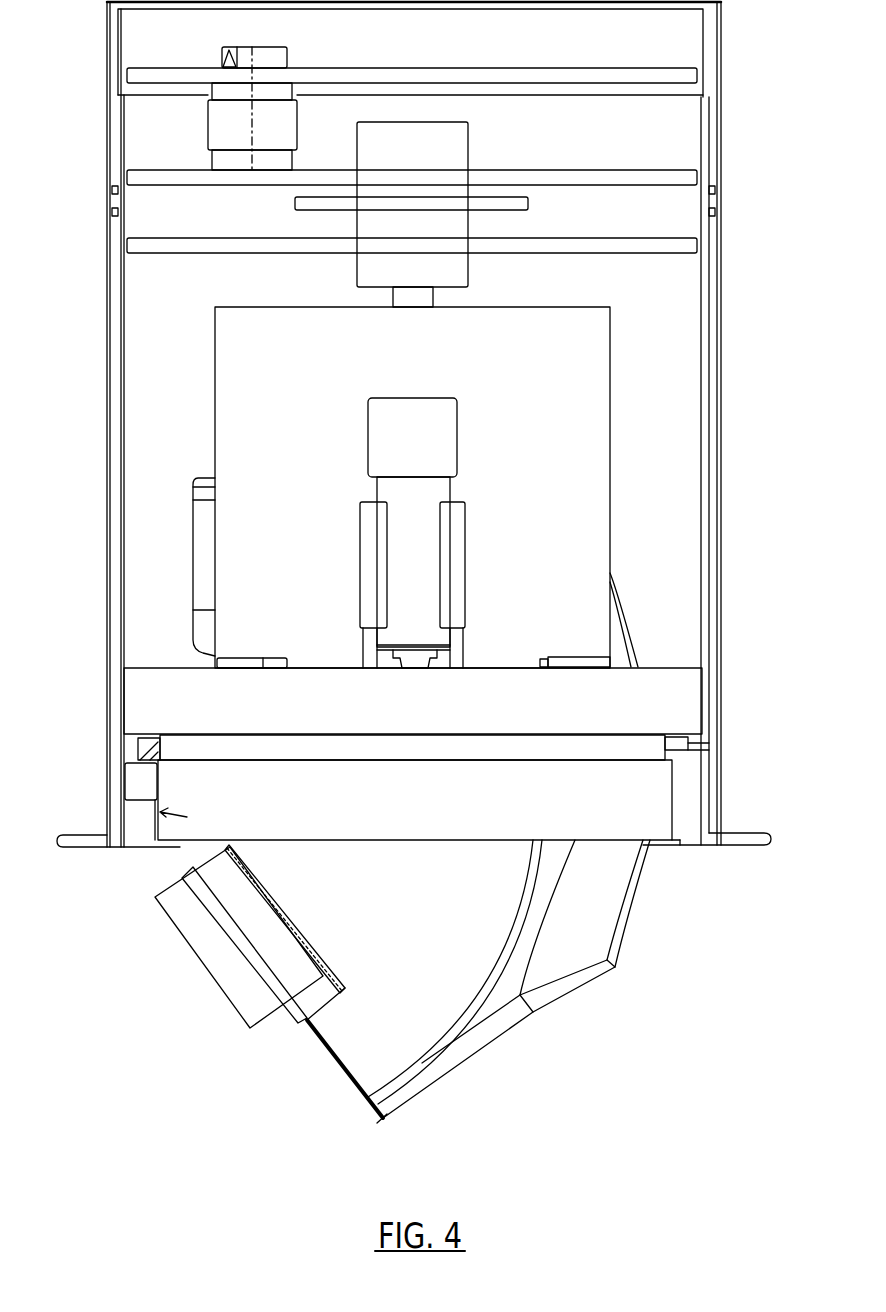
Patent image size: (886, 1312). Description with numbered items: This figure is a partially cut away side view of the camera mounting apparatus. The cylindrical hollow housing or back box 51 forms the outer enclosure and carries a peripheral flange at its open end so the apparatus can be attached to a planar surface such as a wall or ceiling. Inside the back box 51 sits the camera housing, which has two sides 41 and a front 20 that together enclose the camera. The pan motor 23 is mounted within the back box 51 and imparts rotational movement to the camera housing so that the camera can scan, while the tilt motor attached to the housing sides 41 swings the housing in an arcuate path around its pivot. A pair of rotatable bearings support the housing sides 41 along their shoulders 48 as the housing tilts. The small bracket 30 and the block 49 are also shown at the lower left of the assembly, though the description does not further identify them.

The hollow housing or back box 51 is at (715, 593).
The pan motor 23 is at (428, 488).
The bracket 30 is at (140, 750).
The block 49 is at (137, 783).
The front 20 is at (230, 973).
The camera housing sides 41 is at (352, 1053).
The shoulders 48 is at (482, 990).